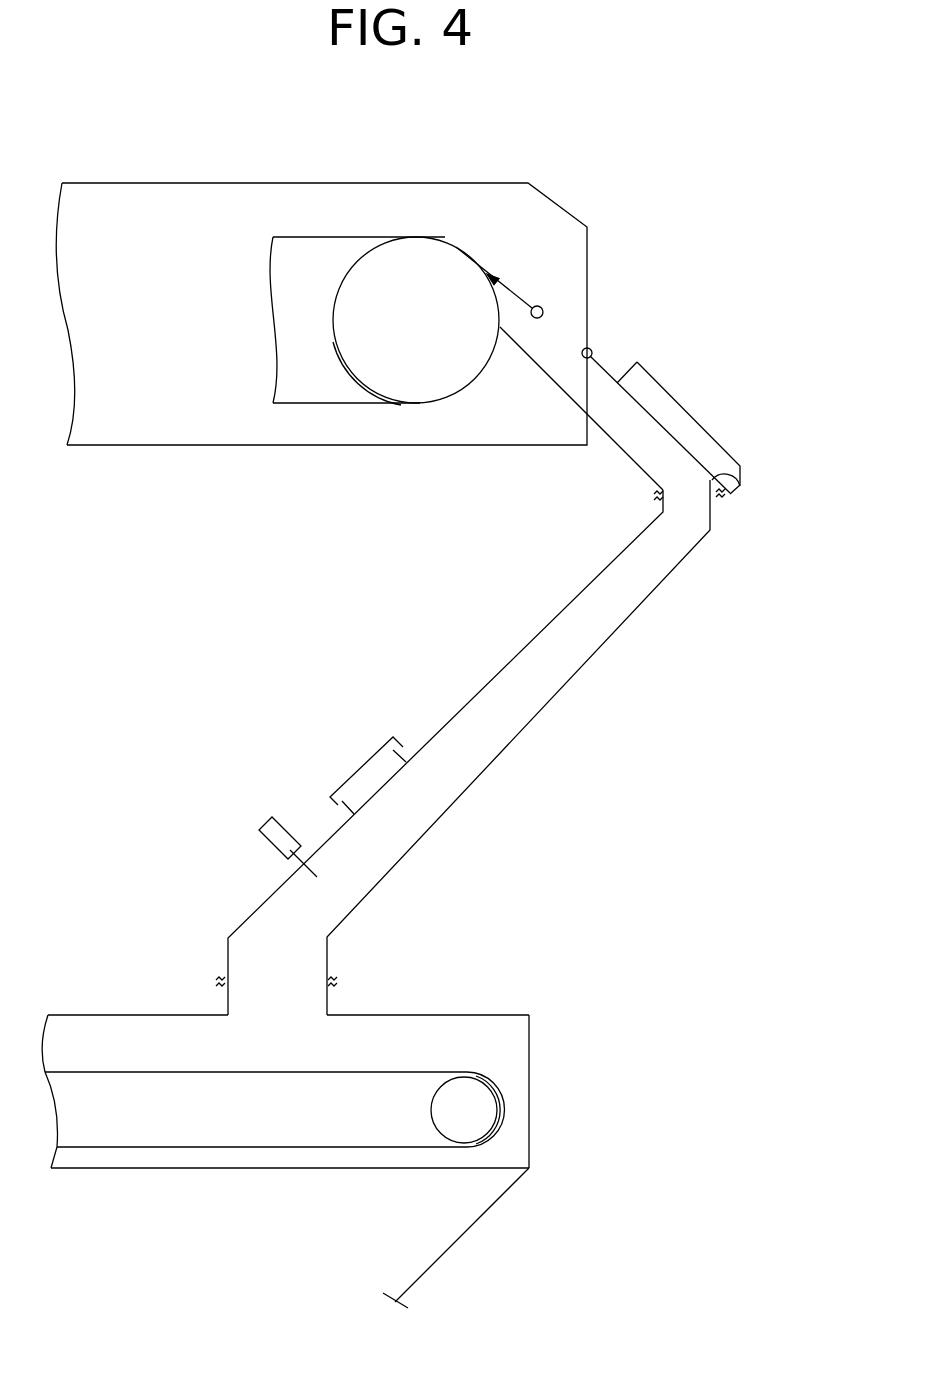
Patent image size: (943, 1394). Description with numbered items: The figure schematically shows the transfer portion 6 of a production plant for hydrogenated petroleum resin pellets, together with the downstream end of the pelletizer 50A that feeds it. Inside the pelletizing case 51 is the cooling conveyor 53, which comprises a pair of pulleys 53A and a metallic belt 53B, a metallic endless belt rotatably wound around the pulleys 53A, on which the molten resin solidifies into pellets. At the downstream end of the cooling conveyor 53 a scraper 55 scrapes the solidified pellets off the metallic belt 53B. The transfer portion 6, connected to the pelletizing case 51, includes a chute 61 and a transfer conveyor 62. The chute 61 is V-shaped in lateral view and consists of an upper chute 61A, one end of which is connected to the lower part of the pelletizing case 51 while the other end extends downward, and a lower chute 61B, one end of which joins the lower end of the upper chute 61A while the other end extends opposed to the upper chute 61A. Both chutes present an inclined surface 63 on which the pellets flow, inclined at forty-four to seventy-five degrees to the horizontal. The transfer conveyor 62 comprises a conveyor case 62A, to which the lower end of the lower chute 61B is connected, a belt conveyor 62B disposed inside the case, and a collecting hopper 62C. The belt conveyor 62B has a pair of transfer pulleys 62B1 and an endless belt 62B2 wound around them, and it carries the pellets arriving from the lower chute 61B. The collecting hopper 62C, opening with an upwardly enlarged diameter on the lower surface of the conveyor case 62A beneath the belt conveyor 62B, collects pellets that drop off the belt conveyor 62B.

The transfer portion 6 is at (702, 817).
The pelletizer 50A is at (398, 122).
The pelletizing case 51 is at (453, 182).
The cooling conveyor 53 is at (330, 405).
The pulleys 53A is at (375, 405).
The metallic belt 53B is at (288, 405).
The scraper 55 is at (530, 306).
The chute 61 is at (806, 481).
The upper chute 61A is at (740, 489).
The lower chute 61B is at (712, 532).
The transfer conveyor 62 is at (473, 1013).
The conveyor case 62A is at (530, 1032).
The belt conveyor 62B is at (208, 1150).
The transfer pulleys 62B1 is at (477, 1113).
The endless belt 62B2 is at (380, 1068).
The collecting hopper 62C is at (448, 1253).
The inclined surface 63 is at (655, 493).